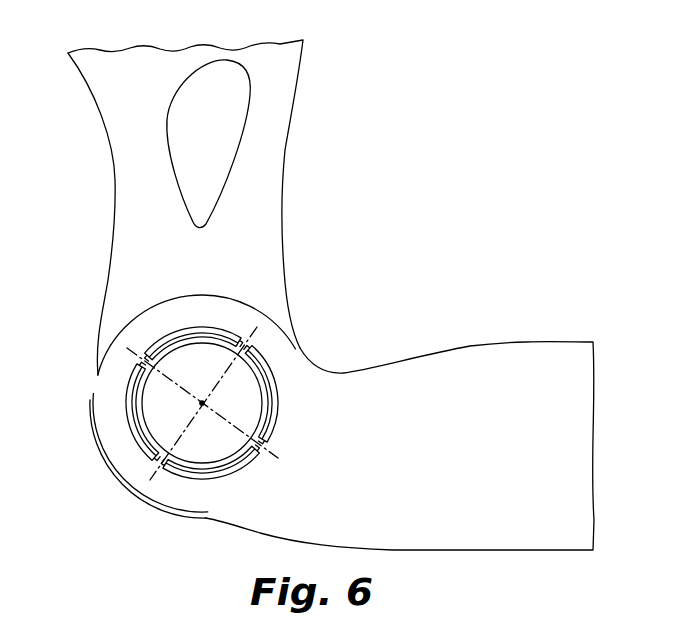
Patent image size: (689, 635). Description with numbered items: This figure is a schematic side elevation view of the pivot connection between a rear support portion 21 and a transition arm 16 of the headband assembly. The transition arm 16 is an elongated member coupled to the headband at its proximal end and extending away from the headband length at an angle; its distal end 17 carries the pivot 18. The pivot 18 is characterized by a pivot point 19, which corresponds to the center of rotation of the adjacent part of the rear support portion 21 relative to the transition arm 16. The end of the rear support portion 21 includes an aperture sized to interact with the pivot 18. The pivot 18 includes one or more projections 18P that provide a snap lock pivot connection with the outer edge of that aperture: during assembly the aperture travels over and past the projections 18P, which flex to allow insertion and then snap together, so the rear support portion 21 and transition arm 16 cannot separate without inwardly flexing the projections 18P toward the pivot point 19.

The transition arm 16 is at (283, 140).
The distal end 17 is at (136, 321).
The pivot 18 is at (213, 475).
The projection 18P is at (150, 415).
The pivot point 19 is at (204, 403).
The rear support portion 21 is at (463, 362).